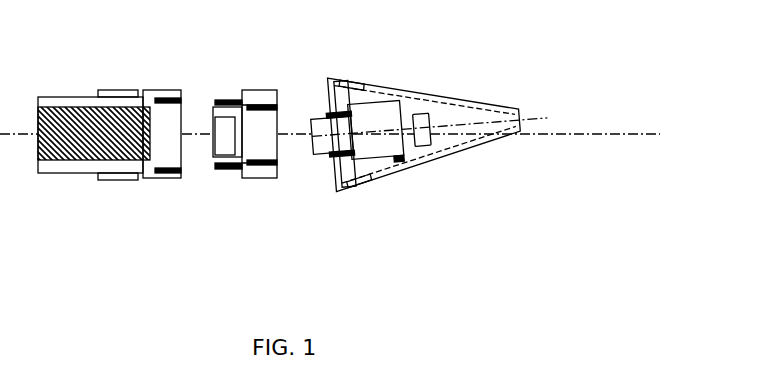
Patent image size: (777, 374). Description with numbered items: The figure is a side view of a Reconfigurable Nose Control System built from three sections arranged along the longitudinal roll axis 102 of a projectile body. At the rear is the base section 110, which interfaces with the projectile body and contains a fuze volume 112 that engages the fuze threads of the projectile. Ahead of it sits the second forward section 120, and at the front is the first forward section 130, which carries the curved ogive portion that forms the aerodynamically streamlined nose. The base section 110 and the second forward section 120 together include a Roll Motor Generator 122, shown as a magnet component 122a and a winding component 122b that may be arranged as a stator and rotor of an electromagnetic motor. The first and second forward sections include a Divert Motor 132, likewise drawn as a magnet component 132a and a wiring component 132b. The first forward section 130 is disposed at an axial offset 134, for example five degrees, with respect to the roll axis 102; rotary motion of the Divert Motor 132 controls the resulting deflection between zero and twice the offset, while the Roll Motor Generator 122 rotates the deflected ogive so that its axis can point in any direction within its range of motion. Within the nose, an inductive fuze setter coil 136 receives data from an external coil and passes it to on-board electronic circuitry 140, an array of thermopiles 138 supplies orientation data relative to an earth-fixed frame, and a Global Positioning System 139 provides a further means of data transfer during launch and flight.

The longitudinal (roll) axis 102 is at (602, 135).
The base section 110 is at (108, 165).
The fuze volume 112 is at (67, 118).
The second forward section 120 is at (250, 176).
The Roll Motor Generator (RMG) 122 is at (235, 40).
The magnet component 122a is at (170, 97).
The winding component 122b is at (230, 102).
The first forward section 130 is at (452, 146).
The Divert Motor (DM) 132 is at (345, 40).
The magnet component 132a is at (258, 107).
The wiring component 132b is at (336, 80).
The axial offset 134 is at (530, 118).
The inductive fuze setter coil 136 is at (389, 98).
The array of thermopiles (sensors) 138 is at (361, 82).
The Global Positioning System (GPS) 139 is at (428, 127).
The on-board electronic circuitry 140 is at (370, 108).